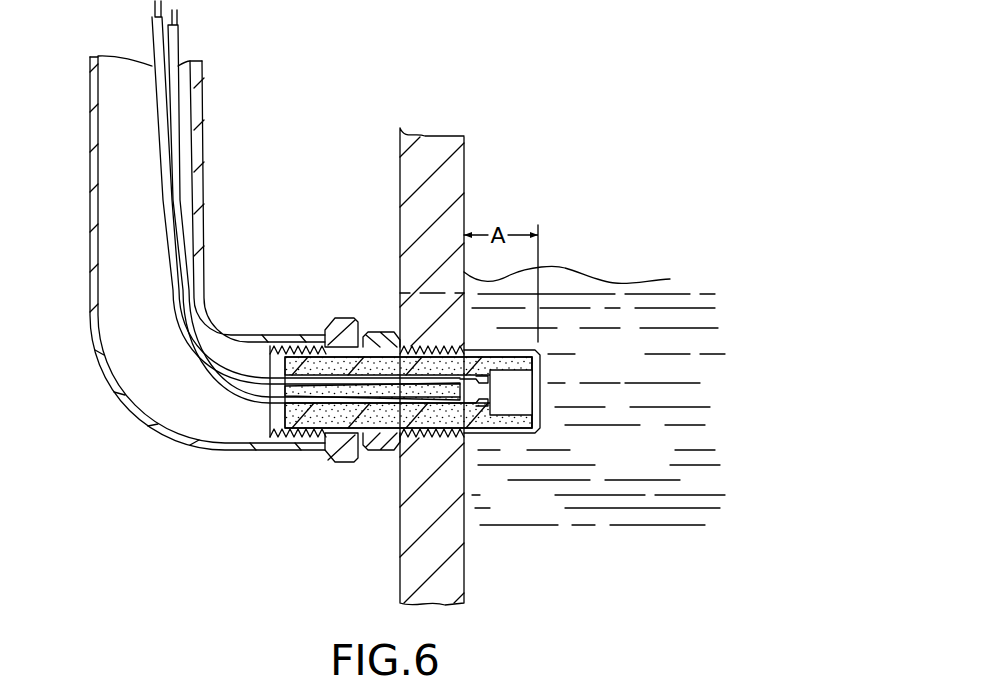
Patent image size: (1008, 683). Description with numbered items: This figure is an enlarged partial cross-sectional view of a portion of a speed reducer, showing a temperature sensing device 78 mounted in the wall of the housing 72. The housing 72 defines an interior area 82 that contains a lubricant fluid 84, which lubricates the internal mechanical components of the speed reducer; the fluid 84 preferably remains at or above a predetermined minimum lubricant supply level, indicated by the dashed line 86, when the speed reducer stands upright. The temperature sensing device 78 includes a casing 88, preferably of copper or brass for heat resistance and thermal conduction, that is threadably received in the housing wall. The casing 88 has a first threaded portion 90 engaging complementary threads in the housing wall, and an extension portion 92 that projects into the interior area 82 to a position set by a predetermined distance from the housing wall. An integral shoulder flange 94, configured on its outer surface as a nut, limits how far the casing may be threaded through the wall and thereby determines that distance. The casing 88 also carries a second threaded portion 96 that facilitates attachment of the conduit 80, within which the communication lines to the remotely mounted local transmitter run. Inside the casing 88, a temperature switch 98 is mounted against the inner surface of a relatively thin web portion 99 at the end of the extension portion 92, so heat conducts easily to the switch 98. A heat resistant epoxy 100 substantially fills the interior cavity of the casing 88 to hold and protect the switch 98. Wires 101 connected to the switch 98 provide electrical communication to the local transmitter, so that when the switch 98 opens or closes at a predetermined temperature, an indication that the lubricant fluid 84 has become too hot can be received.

The housing 72 is at (399, 157).
The temperature sensing device 78 is at (305, 246).
The conduit 80 is at (92, 152).
The interior area 82 is at (598, 181).
The lubricant fluid 84 is at (640, 280).
The predetermined minimum lubricant supply level 86 is at (423, 292).
The casing 88 is at (368, 466).
The first threaded portion 90 is at (402, 494).
The extension portion 92 is at (508, 433).
The integral shoulder flange 94 is at (372, 330).
The second threaded portion 96 is at (290, 443).
The temperature switch 98 is at (523, 403).
The web portion 99 is at (540, 373).
The heat resistant epoxy 100 is at (272, 372).
The wires 101 is at (256, 390).